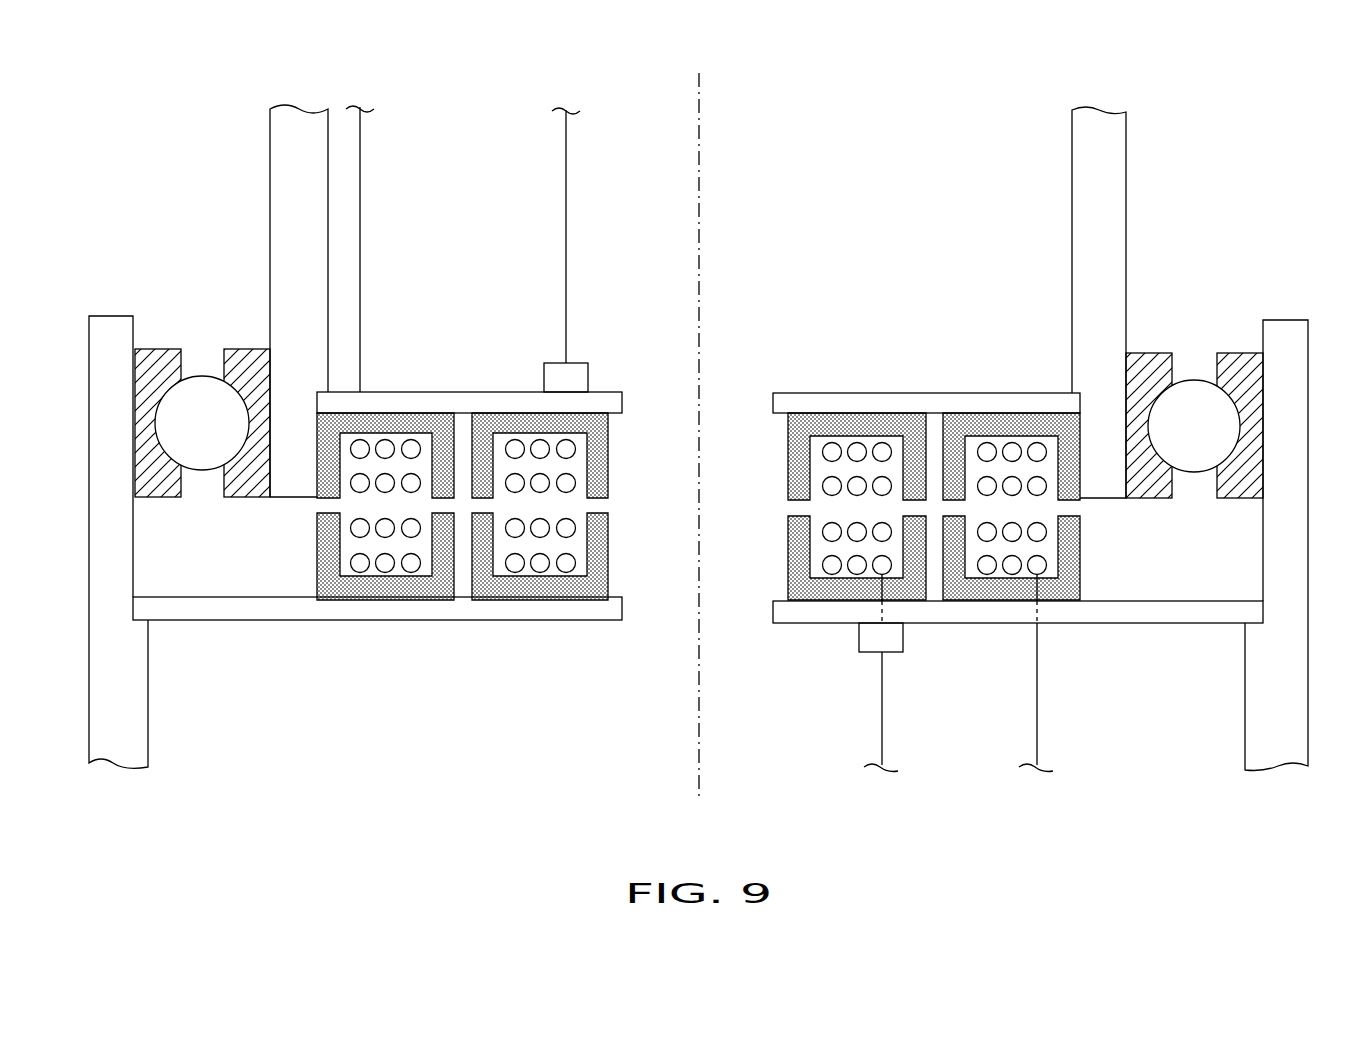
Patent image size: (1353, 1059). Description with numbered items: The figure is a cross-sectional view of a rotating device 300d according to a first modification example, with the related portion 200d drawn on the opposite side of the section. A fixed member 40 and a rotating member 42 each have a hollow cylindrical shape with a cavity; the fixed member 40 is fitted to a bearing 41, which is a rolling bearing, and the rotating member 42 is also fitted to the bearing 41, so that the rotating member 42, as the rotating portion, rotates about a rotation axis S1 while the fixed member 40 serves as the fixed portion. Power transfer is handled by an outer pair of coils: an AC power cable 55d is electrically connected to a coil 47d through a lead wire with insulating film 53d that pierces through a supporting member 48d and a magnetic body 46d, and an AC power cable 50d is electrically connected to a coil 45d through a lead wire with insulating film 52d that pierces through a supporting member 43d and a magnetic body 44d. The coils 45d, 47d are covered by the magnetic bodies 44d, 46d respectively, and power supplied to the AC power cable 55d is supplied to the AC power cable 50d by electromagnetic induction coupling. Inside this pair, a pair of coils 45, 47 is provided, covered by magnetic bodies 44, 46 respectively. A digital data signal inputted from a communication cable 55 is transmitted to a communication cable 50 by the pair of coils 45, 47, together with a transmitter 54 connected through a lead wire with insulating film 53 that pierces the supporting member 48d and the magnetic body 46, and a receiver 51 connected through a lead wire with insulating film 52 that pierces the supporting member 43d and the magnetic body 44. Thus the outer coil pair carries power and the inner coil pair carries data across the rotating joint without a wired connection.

The fixed member 40 is at (148, 688).
The bearing 41 is at (161, 349).
The rotating member 42 is at (270, 197).
The supporting member 43d is at (622, 403).
The magnetic body 44 is at (597, 452).
The magnetic body 44d is at (440, 437).
The coil 45 is at (567, 486).
The coil 45d is at (412, 440).
The magnetic body 46 is at (597, 553).
The magnetic body 46d is at (340, 590).
The coil 47 is at (562, 566).
The coil 47d is at (408, 566).
The supporting member 48d is at (612, 610).
The communication cable 50 is at (566, 192).
The AC power cable 50d is at (360, 190).
The receiver 51 is at (575, 372).
The lead wire with insulating film 52 is at (565, 407).
The lead wire with insulating film 52d is at (363, 408).
The lead wire with insulating film 53 is at (880, 605).
The lead wire with insulating film 53d is at (1035, 605).
The transmitter 54 is at (903, 637).
The communication cable 55 is at (883, 707).
The AC power cable 55d is at (1038, 707).
The rotation axis S1 is at (703, 165).
The motor unit 200d is at (1008, 298).
The rotating device 300d is at (836, 50).